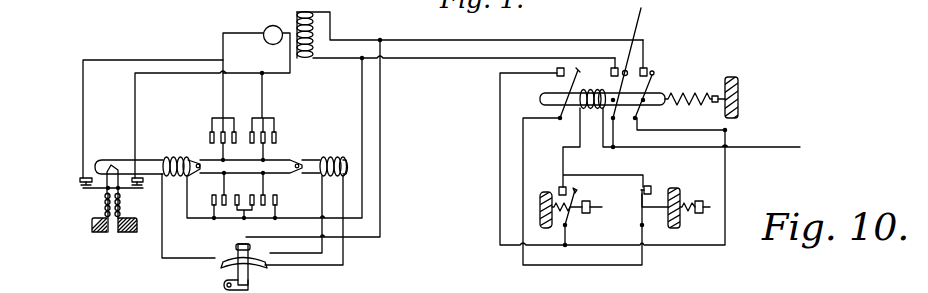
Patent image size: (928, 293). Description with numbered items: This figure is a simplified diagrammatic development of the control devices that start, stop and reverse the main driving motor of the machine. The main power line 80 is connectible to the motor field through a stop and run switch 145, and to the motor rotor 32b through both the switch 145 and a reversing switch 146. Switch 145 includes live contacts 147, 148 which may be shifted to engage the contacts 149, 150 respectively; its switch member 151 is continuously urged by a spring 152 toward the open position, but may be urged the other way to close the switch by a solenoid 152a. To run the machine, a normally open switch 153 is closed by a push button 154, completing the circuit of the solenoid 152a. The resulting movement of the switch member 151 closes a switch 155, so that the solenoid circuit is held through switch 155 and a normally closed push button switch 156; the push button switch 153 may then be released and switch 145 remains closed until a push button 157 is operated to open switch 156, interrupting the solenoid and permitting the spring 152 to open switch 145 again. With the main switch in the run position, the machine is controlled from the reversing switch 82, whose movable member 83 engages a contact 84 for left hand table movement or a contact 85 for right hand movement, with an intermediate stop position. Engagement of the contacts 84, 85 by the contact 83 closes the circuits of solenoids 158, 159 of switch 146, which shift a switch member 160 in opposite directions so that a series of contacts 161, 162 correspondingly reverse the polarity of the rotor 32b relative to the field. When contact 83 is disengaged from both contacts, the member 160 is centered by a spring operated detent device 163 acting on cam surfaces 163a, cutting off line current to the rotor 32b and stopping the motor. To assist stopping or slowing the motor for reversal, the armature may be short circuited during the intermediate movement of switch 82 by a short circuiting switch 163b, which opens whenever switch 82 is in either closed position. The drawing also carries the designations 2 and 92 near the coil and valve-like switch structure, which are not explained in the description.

The solenoid coil 2 is at (318, 0).
The motor rotor 32b is at (270, 31).
The main power line 80 is at (800, 142).
The reversing switch 82 is at (217, 273).
The movable switch member 83 is at (242, 244).
The switch contact 84 is at (276, 246).
The switch contact 85 is at (218, 255).
The valve handle 92 is at (228, 287).
The stop and run switch 145 is at (665, 63).
The reversing switch 146 is at (186, 130).
The live contact 147 is at (623, 59).
The live contact 148 is at (655, 74).
The switch contact 149 is at (615, 67).
The switch contact 150 is at (644, 67).
The switch member 151 is at (540, 102).
The spring 152 is at (670, 104).
The solenoid 152a is at (557, 104).
The normally open switch 153 is at (530, 196).
The push button 154 is at (602, 207).
The holding switch 155 is at (562, 79).
The normally closed push button switch 156 is at (651, 186).
The push button 157 is at (710, 207).
The solenoid 158 is at (330, 157).
The solenoid 159 is at (176, 156).
The switch member 160 is at (203, 158).
The contacts 161 is at (292, 130).
The contacts 162 is at (279, 202).
The spring operated detent device 163 is at (108, 183).
The cam surfaces 163a is at (109, 164).
The short circuiting switch 163b is at (74, 171).